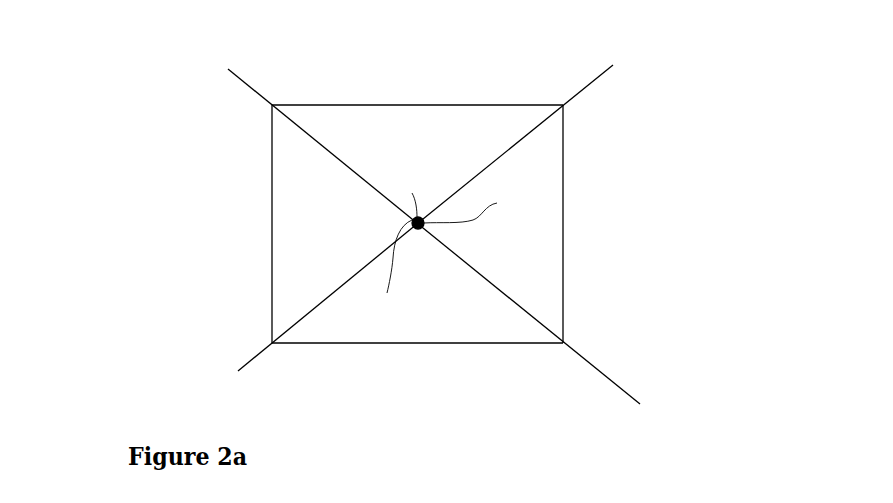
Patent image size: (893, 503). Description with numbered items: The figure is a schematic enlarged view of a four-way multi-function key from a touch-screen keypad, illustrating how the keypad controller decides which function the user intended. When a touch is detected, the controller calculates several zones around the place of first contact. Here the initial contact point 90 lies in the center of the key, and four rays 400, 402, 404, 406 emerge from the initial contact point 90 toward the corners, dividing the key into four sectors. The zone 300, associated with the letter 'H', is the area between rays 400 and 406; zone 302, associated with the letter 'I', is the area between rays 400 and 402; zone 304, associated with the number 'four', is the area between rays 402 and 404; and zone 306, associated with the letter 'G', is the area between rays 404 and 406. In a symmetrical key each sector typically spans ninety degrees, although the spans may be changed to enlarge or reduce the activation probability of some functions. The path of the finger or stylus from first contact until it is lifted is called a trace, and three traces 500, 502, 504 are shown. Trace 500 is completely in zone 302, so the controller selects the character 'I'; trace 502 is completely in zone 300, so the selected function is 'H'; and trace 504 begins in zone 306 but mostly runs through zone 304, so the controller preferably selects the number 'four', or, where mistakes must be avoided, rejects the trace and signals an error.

The initial contact point 90 is at (422, 235).
The zone 300 is at (452, 148).
The zone 302 is at (543, 228).
The zone 304 is at (395, 320).
The zone 306 is at (297, 173).
The ray 400 is at (618, 58).
The ray 402 is at (645, 405).
The ray 404 is at (233, 378).
The ray 406 is at (222, 63).
The trace 500 is at (476, 227).
The trace 502 is at (404, 193).
The trace 504 is at (387, 272).